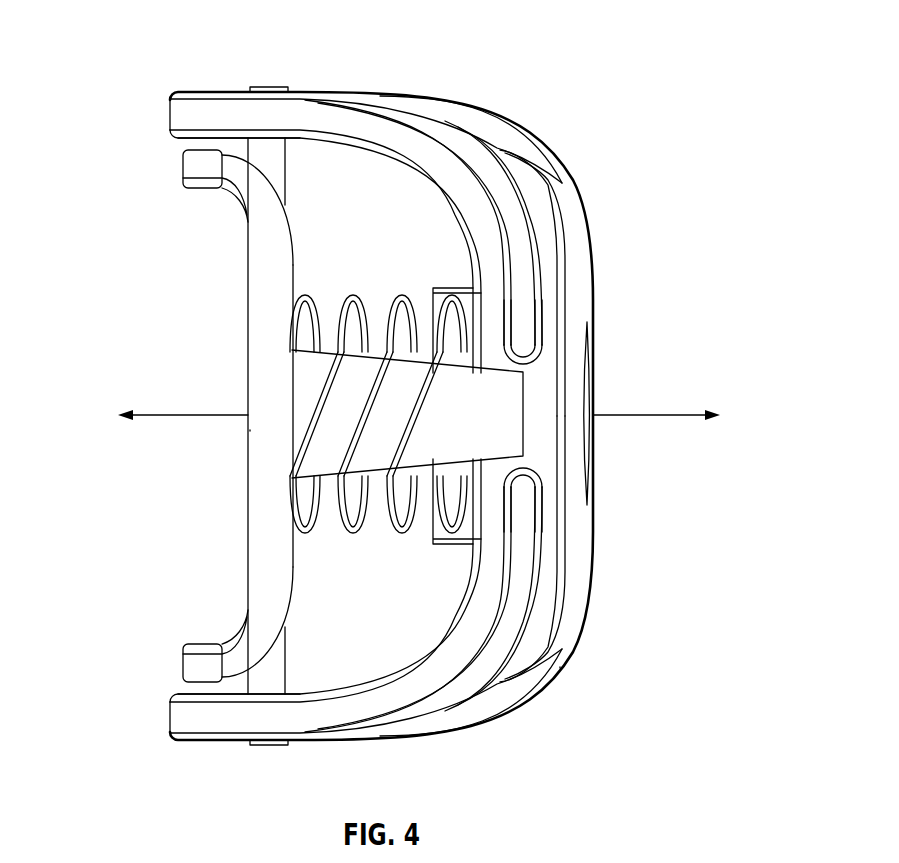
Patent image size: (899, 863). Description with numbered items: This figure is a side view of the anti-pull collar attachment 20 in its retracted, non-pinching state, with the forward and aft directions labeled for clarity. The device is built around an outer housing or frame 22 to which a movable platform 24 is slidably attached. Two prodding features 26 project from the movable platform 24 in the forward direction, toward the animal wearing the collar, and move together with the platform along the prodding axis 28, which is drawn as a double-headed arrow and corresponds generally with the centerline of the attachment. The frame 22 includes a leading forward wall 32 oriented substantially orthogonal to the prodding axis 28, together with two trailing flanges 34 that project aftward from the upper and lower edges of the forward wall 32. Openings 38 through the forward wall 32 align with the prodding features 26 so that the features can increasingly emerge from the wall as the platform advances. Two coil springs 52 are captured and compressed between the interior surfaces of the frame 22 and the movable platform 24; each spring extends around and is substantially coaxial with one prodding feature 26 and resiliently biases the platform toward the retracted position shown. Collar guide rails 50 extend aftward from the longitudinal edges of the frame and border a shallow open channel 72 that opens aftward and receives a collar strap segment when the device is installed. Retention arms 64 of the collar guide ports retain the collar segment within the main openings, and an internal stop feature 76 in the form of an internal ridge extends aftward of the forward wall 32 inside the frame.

The anti-pull collar attachment 20 is at (73, 47).
The frame 22 is at (578, 179).
The movable platform 24 is at (247, 328).
The prodding features 26 is at (403, 462).
The prodding axis 28 is at (182, 413).
The forward wall 32 is at (560, 668).
The trailing flanges 34 is at (212, 88).
The openings 38 is at (592, 382).
The collar guide rails 50 is at (182, 167).
The coil springs 52 is at (353, 296).
The retention arms 64 is at (494, 276).
The open channel 72 is at (230, 458).
The internal stop feature 76 is at (433, 291).